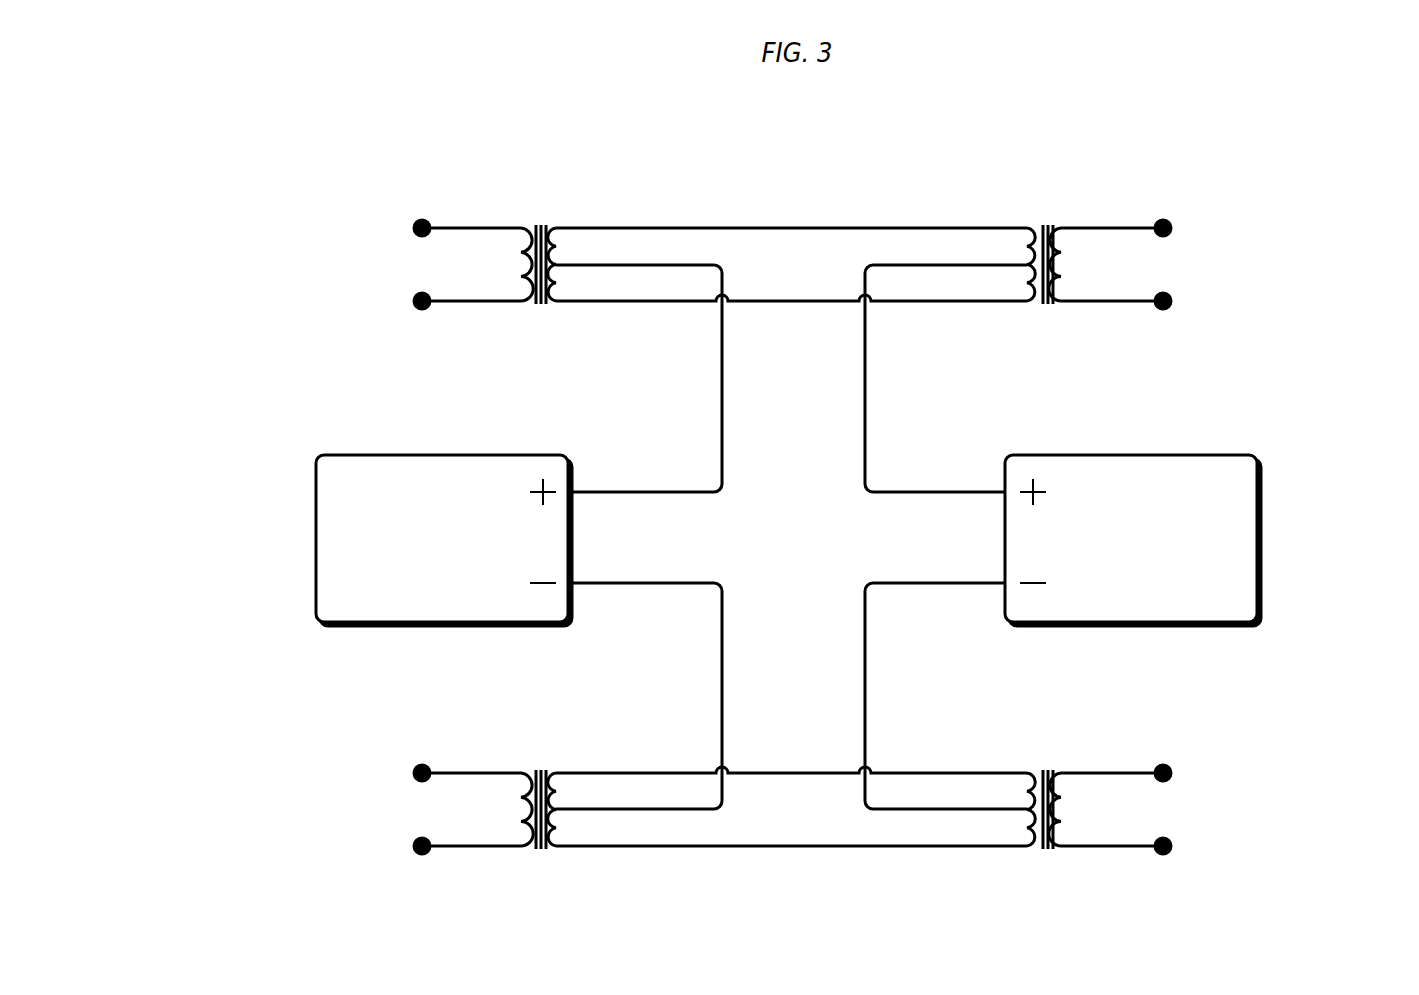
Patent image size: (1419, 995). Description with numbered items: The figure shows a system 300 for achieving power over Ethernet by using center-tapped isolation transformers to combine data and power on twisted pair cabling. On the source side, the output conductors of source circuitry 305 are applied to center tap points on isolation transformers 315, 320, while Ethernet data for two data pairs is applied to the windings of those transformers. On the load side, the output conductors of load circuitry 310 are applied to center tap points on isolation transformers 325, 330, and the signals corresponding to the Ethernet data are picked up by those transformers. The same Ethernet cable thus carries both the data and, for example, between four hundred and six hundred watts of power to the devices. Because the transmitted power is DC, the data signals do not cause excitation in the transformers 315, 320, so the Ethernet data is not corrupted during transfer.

The system 300 is at (285, 110).
The source circuitry 305 is at (316, 533).
The load circuitry 310 is at (1262, 534).
The isolation transformer 315 is at (533, 198).
The isolation transformer 320 is at (533, 882).
The isolation transformer 325 is at (1048, 198).
The isolation transformer 330 is at (1052, 882).